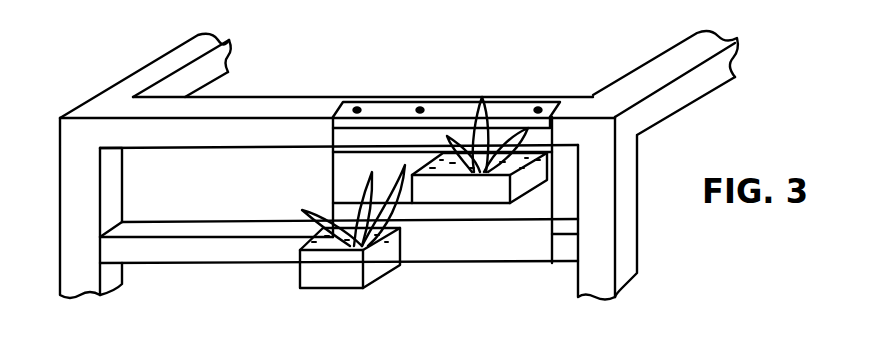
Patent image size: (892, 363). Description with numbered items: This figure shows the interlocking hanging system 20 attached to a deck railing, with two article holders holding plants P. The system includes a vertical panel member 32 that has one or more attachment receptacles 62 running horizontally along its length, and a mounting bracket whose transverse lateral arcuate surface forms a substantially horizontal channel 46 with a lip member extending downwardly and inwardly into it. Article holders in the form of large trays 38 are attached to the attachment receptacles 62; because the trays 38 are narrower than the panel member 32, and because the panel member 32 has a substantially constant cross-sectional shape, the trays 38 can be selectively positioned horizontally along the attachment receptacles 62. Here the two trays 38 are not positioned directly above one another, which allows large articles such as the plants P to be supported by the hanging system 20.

The interlocking hanging system 20 is at (427, 270).
The vertical panel member 32 is at (490, 253).
The large tray 38 is at (318, 276).
The substantially horizontal channel 46 is at (332, 133).
The attachment receptacle 62 is at (344, 153).
The plant P is at (480, 128).